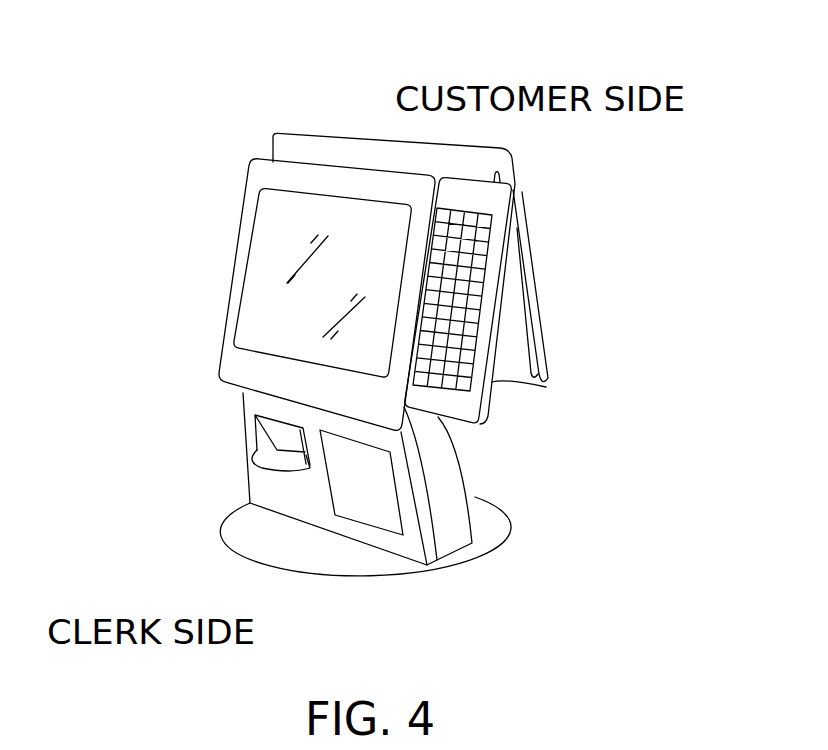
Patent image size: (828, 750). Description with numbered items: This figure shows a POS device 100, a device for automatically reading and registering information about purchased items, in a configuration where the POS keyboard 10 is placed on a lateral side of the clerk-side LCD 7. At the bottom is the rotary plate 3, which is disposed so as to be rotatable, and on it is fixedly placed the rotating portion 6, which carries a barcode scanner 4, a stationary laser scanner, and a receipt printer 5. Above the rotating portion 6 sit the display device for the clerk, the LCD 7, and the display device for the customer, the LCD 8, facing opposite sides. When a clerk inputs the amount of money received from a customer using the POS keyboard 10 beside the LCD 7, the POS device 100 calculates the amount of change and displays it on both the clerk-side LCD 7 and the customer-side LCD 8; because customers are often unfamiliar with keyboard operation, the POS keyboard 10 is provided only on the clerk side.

The POS device 100 is at (273, 110).
The clerk-side LCD 7 is at (241, 227).
The POS keyboard 10 is at (470, 414).
The customer-side LCD 8 is at (537, 332).
The rotating portion 6 is at (452, 475).
The receipt printer 5 is at (268, 443).
The barcode scanner 4 is at (380, 520).
The rotary plate 3 is at (490, 540).